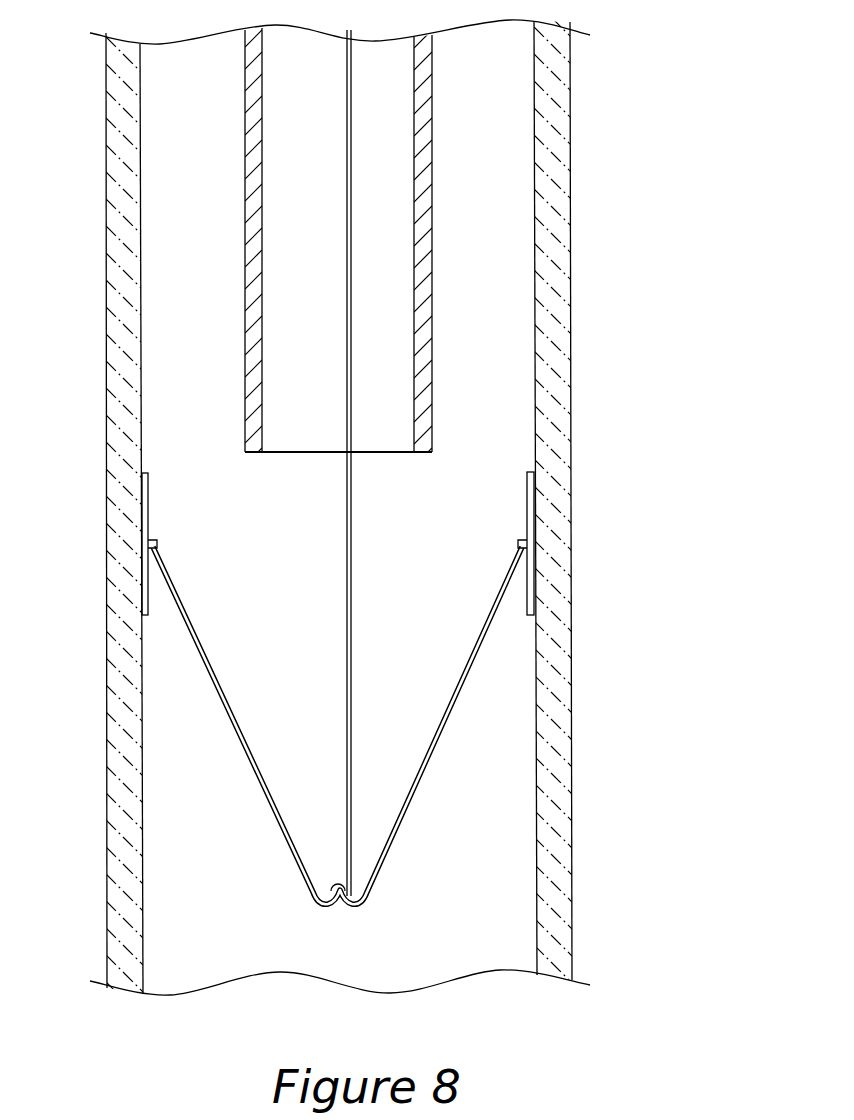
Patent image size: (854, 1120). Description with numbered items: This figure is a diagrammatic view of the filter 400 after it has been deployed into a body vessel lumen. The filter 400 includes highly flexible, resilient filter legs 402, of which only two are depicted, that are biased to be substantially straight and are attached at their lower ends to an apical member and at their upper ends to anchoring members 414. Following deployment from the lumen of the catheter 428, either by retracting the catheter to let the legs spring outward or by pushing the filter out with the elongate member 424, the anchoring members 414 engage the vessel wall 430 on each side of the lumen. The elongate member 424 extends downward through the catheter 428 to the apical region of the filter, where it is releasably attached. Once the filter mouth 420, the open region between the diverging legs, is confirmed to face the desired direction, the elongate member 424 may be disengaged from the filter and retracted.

The filter 400 is at (349, 688).
The filter legs 402 is at (200, 665).
The anchoring members 414 is at (143, 522).
The filter mouth 420 is at (243, 510).
The elongate member 424 is at (351, 145).
The catheter 428 is at (432, 200).
The vessel wall 430 is at (566, 340).